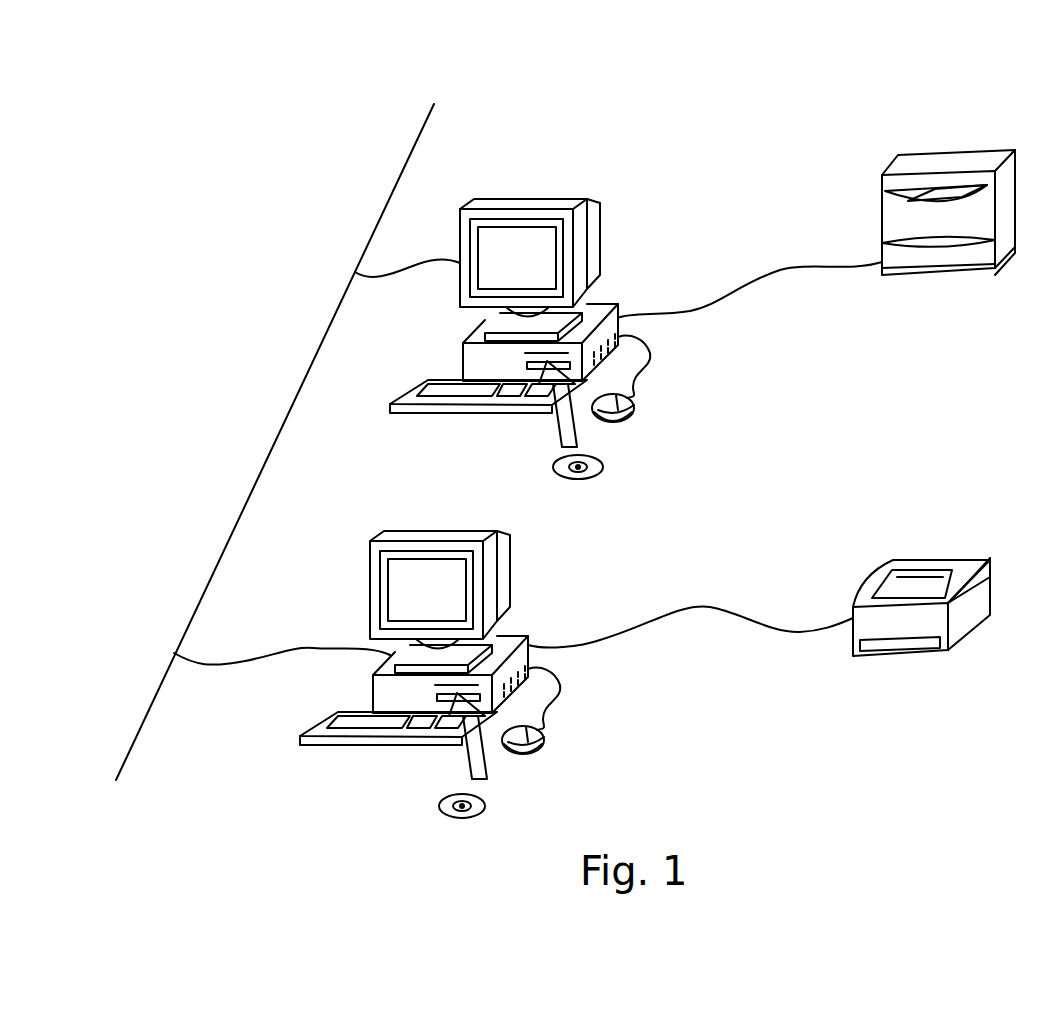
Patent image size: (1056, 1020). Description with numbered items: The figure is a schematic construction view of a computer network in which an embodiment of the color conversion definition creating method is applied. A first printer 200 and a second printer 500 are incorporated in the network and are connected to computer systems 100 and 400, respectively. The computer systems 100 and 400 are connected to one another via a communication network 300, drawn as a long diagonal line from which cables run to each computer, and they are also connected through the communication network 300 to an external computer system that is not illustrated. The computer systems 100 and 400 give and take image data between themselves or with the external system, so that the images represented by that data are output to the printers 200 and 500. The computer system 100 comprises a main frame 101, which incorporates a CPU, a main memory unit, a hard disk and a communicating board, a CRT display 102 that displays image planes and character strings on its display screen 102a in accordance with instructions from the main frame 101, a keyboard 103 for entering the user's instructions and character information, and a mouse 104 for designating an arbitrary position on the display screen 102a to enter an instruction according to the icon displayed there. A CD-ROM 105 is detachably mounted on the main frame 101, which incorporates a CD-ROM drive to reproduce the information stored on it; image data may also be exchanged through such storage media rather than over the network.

The computer system 100 is at (455, 644).
The main frame 101 is at (479, 685).
The CRT display 102 is at (393, 559).
The display screen 102a is at (371, 586).
The keyboard 103 is at (389, 702).
The mouse 104 is at (567, 712).
The CD-ROM 105 is at (485, 807).
The first printer 200 is at (958, 535).
The communication network 300 is at (133, 750).
The computer system 400 is at (618, 182).
The second printer 500 is at (948, 122).